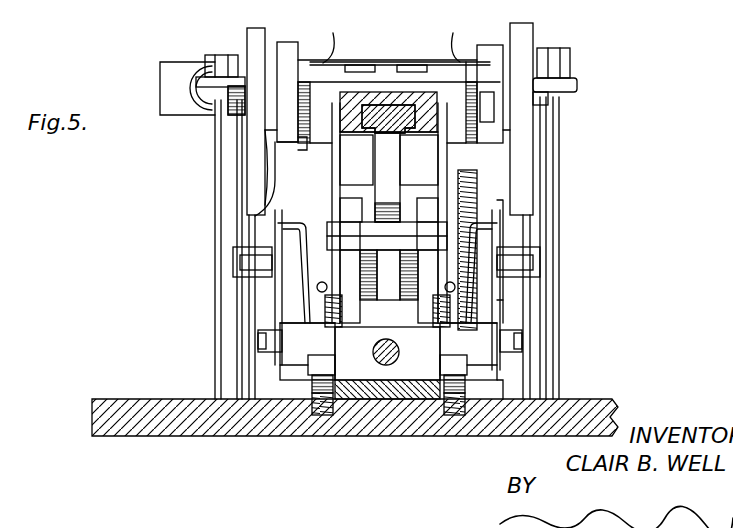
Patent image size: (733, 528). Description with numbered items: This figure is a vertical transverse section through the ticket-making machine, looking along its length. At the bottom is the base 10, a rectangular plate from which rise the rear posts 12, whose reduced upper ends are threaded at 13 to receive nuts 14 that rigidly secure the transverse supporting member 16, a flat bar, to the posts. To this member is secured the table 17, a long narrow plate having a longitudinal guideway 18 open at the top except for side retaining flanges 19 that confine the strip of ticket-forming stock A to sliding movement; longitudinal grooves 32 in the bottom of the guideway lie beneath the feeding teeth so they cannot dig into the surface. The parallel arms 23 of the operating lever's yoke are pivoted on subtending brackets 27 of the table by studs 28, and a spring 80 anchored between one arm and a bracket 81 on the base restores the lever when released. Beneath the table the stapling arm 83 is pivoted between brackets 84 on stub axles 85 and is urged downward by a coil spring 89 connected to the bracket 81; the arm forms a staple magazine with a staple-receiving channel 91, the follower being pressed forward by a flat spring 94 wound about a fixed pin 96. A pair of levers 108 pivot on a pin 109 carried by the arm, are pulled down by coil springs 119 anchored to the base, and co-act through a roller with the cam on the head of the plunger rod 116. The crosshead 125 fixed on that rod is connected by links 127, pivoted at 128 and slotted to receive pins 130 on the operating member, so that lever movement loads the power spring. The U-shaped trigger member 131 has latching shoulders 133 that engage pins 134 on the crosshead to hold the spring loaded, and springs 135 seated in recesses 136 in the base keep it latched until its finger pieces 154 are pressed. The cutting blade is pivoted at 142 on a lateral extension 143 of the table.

The base 10 is at (172, 432).
The rear posts 12 is at (225, 340).
The threaded ends 13 is at (228, 52).
The nuts 14 is at (210, 58).
The transverse supporting member 16 is at (215, 92).
The table 17 is at (300, 66).
The longitudinal guideway 18 is at (466, 62).
The side retaining flanges 19 is at (330, 63).
The arms 23 is at (258, 36).
The brackets 27 is at (283, 133).
The studs 28 is at (242, 118).
The longitudinal grooves 32 is at (358, 64).
The spring 80 is at (505, 300).
The bracket 81 is at (495, 392).
The arm 83 is at (438, 96).
The brackets 84 is at (300, 160).
The stub axles 85 is at (315, 154).
The coil spring 89 is at (505, 212).
The staple-receiving channel 91 is at (358, 132).
The flat spring 94 is at (372, 326).
The fixed pin 96 is at (372, 211).
The levers 108 is at (332, 279).
The pin 109 is at (332, 172).
The plunger rod 116 is at (400, 359).
The coil springs 119 is at (340, 312).
The crosshead 125 is at (413, 373).
The links 127 is at (277, 286).
The pivotal connection 128 is at (258, 336).
The pins 130 is at (235, 256).
The trigger member 131 is at (308, 373).
The latching shoulders 133 is at (318, 357).
The pins 134 is at (282, 363).
The springs 135 is at (320, 414).
The recesses 136 is at (310, 414).
The pivotal mounting 142 is at (195, 80).
The lateral extension 143 is at (166, 70).
The finger pieces 154 is at (280, 222).
The stock A is at (383, 62).